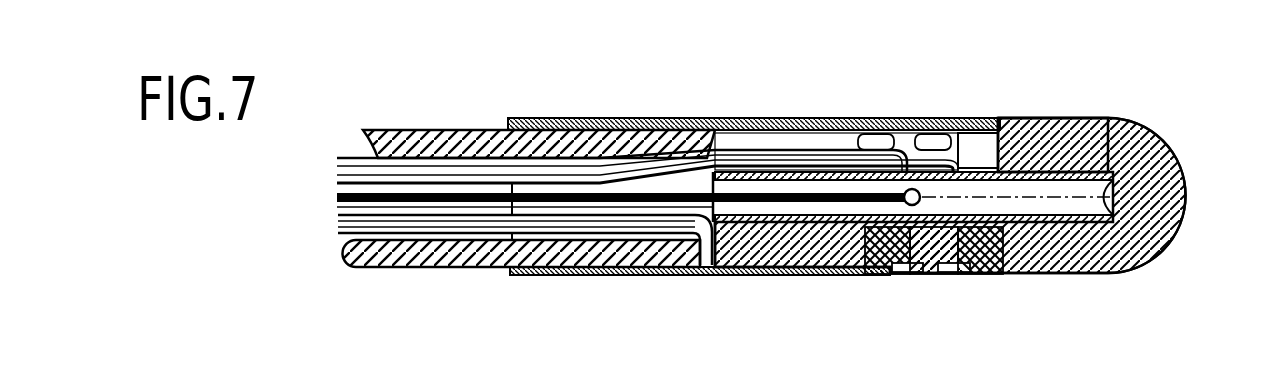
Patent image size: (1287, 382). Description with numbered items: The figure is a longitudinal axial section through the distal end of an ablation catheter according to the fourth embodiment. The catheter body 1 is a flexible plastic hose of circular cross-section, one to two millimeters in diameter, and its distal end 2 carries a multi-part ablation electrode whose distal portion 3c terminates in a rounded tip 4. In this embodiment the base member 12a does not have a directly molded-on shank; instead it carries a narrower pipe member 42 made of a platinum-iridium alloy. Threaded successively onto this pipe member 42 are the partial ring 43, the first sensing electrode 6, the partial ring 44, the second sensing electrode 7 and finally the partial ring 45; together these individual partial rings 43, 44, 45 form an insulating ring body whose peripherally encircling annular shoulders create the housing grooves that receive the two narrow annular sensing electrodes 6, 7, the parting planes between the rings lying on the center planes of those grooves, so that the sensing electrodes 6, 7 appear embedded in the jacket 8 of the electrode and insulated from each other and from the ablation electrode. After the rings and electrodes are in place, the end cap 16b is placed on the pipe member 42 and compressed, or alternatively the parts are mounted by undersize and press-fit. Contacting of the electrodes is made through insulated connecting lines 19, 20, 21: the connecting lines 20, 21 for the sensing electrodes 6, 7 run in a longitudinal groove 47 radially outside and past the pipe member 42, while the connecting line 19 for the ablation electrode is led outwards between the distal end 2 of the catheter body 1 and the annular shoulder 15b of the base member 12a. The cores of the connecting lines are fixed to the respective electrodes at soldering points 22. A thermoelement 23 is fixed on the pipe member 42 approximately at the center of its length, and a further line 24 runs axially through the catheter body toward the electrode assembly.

The catheter body 1 is at (390, 132).
The distal end 2 is at (603, 118).
The distal end portion 3c is at (1017, 110).
The tip 4 is at (1188, 187).
The sensing electrode 6 is at (960, 120).
The sensing electrode 7 is at (897, 118).
The jacket 8 is at (813, 120).
The base member 12a is at (764, 275).
The annular shoulder 15b is at (853, 226).
The end cap 16b is at (1113, 233).
The connecting line 19 is at (408, 220).
The connecting line 20 is at (412, 155).
The connecting line 21 is at (472, 155).
The soldering point 22 is at (950, 120).
The thermoelement 23 is at (1007, 272).
The drive shaft 24 is at (338, 205).
The pipe member 42 is at (1087, 118).
The partial ring 43 is at (890, 276).
The partial ring 44 is at (930, 276).
The partial ring 45 is at (977, 276).
The longitudinal groove 47 is at (760, 122).